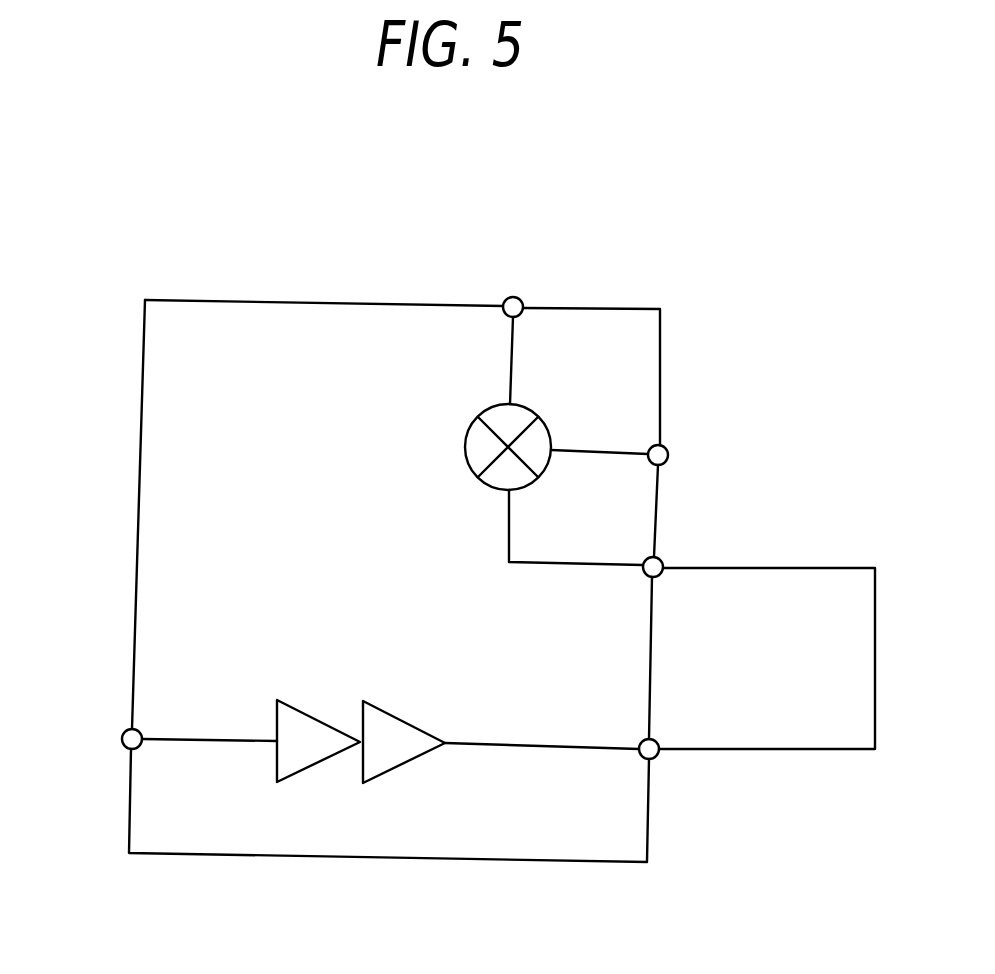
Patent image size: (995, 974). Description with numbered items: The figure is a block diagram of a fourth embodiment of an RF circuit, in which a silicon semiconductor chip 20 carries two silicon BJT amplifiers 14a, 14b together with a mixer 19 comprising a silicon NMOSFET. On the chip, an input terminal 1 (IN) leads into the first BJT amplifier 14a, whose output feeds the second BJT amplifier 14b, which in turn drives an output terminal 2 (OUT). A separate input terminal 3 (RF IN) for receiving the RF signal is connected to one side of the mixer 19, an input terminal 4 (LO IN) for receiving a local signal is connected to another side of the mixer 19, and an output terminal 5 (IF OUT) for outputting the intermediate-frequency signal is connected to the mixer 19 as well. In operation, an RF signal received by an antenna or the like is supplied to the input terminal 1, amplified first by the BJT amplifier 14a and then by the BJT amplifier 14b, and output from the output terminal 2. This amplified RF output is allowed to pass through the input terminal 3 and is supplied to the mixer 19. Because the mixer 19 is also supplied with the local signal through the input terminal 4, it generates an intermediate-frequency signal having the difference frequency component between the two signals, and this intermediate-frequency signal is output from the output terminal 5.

The input terminal 1 is at (124, 745).
The output terminal 2 is at (659, 742).
The input terminal for receiving an RF signal 3 is at (662, 560).
The input terminal for receiving a local signal 4 is at (667, 448).
The output terminal for outputting an intermediate-frequency signal 5 is at (521, 300).
The silicon BJT amplifier 14a is at (324, 763).
The silicon BJT amplifier 14b is at (413, 760).
The mixer 19 is at (466, 452).
The silicon semiconductor chip 20 is at (617, 862).